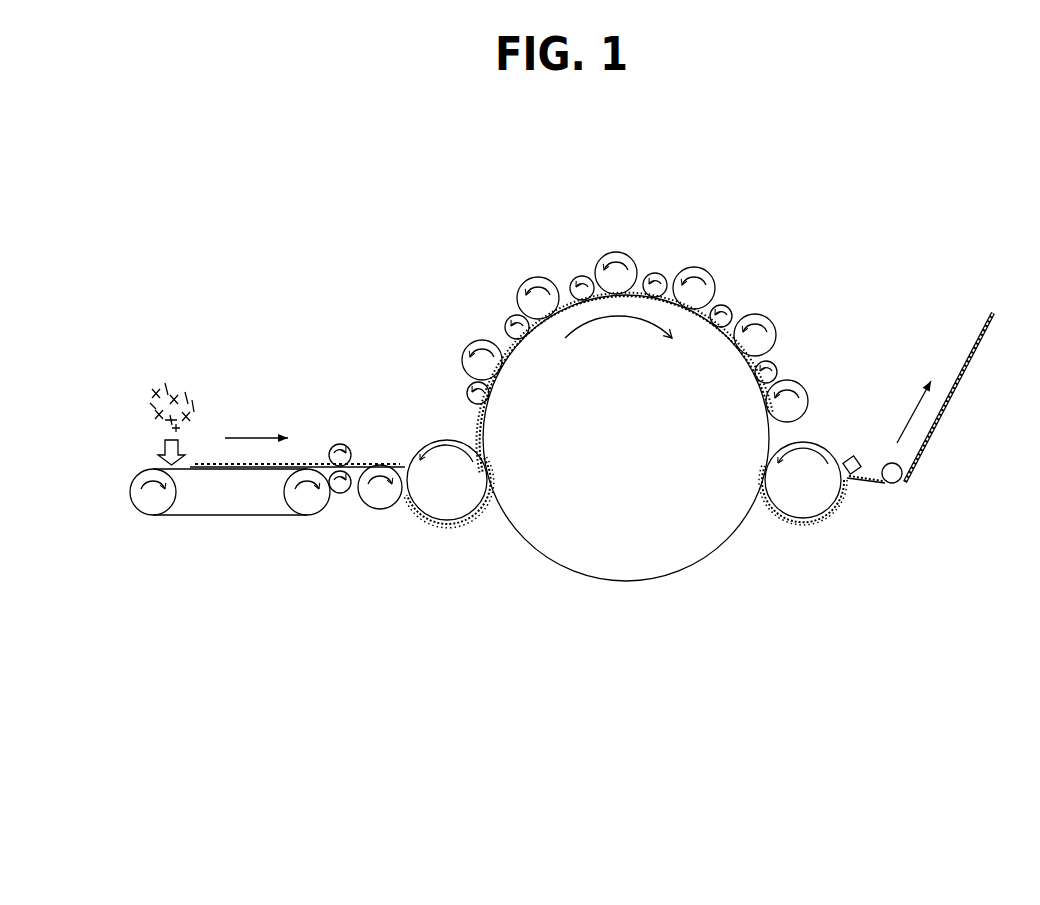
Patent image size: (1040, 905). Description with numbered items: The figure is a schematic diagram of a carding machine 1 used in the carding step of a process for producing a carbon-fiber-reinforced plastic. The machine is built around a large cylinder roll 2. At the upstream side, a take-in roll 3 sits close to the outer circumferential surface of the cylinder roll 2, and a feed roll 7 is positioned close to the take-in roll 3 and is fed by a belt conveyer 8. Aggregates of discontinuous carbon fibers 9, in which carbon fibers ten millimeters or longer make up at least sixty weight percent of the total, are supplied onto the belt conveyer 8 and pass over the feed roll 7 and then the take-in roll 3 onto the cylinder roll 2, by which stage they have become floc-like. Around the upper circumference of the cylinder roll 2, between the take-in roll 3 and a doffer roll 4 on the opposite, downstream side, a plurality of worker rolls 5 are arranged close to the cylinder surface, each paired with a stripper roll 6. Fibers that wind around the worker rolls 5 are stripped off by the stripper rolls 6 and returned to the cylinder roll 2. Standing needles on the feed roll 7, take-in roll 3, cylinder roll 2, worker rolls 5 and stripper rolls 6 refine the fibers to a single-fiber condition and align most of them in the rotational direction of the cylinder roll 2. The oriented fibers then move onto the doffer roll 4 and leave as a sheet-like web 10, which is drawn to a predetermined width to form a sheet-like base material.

The carding machine 1 is at (477, 742).
The cylinder roll 2 is at (558, 568).
The take-in roll 3 is at (413, 512).
The doffer roll 4 is at (820, 520).
The worker rolls 5 is at (517, 285).
The stripper rolls 6 is at (577, 277).
The feed roll 7 is at (365, 505).
The belt conveyer 8 is at (232, 520).
The discontinuous carbon fibers 9 is at (170, 372).
The web 10 is at (947, 413).